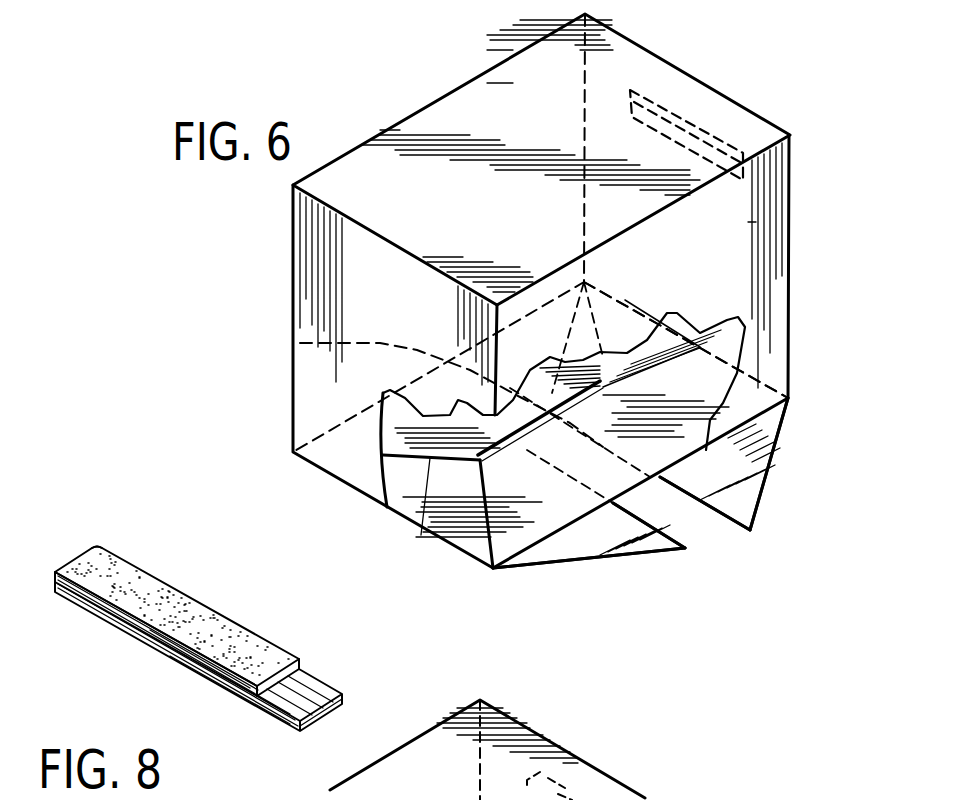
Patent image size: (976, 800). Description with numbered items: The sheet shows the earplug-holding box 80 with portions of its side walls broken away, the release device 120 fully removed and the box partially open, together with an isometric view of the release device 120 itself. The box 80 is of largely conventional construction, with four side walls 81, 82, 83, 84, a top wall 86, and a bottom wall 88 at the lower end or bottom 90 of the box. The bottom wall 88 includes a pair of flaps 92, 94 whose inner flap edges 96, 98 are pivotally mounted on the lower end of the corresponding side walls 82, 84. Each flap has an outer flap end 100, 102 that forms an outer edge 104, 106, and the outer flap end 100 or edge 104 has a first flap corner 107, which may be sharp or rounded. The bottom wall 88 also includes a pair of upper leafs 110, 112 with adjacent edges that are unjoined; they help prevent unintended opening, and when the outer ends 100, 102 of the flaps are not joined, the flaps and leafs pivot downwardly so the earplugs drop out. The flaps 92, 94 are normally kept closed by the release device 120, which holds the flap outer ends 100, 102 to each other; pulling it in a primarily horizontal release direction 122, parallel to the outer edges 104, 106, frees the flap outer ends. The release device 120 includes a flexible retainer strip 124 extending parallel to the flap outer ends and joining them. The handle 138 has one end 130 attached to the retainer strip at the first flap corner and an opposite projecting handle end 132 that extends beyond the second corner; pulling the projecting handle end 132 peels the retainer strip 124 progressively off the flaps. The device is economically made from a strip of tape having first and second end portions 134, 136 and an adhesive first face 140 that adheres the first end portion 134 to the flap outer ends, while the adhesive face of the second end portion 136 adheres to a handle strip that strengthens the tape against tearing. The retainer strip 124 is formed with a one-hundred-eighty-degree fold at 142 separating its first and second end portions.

In FIG. 6, the box 80 is at (281, 220).
In FIG. 6, the side wall 81 is at (757, 197).
In FIG. 6, the side wall 82 is at (767, 220).
In FIG. 6, the side wall 83 is at (475, 107).
In FIG. 6, the side wall 84 is at (312, 275).
In FIG. 6, the top wall 86 is at (625, 60).
In FIG. 6, the bottom wall 88 is at (390, 515).
In FIG. 6, the lower end 90 is at (330, 483).
In FIG. 6, the flap 92 is at (773, 462).
In FIG. 6, the flap 94 is at (527, 573).
In FIG. 6, the inner flap edge 96 is at (790, 402).
In FIG. 6, the inner flap edge 98 is at (478, 565).
In FIG. 6, the outer flap end 100 is at (757, 516).
In FIG. 6, the outer flap end 102 is at (655, 555).
In FIG. 6, the outer edge 104 is at (740, 533).
In FIG. 6, the outer edge 106 is at (677, 530).
In FIG. 6, the flap corner 107 is at (308, 345).
In FIG. 6, the upper leaf 110 is at (420, 537).
In FIG. 6, the upper leaf 112 is at (470, 523).
In FIG. 8, the release device 120 is at (113, 525).
In FIG. 8, the release direction 122 is at (362, 742).
In FIG. 8, the retainer strip 124 is at (207, 513).
In FIG. 8, the handle end 130 is at (58, 580).
In FIG. 8, the projecting handle end 132 is at (345, 706).
In FIG. 8, the tape first end portion 134 is at (122, 620).
In FIG. 8, the tape second end portion 136 is at (182, 662).
In FIG. 8, the handle 138 is at (225, 690).
In FIG. 8, the adhesive first face 140 is at (220, 613).
In FIG. 8, the fold 142 is at (55, 570).